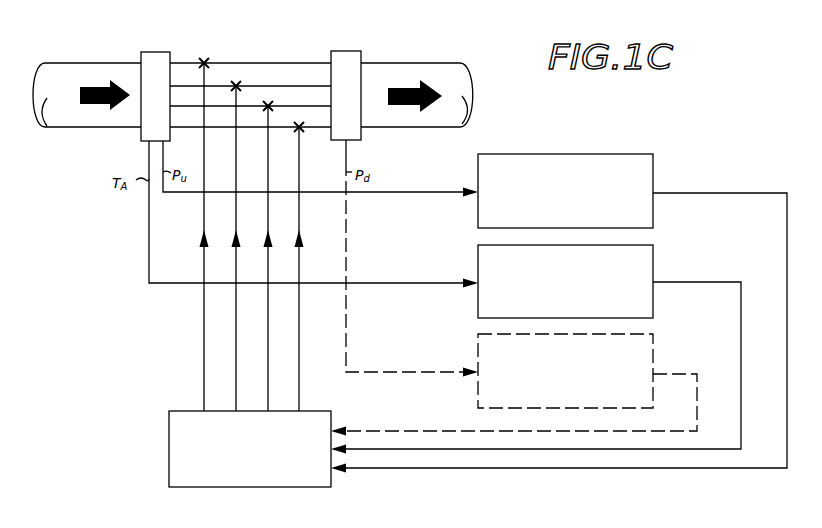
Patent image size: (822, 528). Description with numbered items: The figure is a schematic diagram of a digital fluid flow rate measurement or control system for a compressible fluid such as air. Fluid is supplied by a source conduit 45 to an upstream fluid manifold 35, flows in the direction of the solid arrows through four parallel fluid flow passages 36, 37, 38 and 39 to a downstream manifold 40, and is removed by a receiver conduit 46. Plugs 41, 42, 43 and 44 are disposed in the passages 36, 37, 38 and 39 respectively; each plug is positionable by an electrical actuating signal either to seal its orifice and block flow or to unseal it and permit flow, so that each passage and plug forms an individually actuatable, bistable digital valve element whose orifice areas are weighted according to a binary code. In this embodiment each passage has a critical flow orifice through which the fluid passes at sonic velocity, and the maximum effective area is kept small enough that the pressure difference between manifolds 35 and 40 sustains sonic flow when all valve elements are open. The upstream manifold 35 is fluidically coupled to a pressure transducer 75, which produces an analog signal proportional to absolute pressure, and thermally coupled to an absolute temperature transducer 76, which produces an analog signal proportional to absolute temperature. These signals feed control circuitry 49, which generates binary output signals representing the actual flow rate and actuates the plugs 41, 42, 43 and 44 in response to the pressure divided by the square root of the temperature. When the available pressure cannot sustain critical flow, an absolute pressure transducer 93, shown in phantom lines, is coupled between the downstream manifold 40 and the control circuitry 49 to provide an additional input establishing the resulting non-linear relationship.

The upstream fluid manifold 35 is at (152, 52).
The fluid flow passage 36 is at (292, 53).
The fluid flow passage 37 is at (293, 75).
The fluid flow passage 38 is at (294, 96).
The fluid flow passage 39 is at (201, 128).
The downstream manifold 40 is at (346, 51).
The plug 41 is at (204, 62).
The plug 42 is at (236, 85).
The plug 43 is at (268, 108).
The plug 44 is at (300, 129).
The conduit 45 is at (108, 63).
The conduit 46 is at (426, 51).
The control circuitry 49 is at (169, 412).
The pressure transducer 75 is at (644, 154).
The absolute temperature transducer 76 is at (644, 245).
The absolute pressure transducer 93 is at (644, 334).